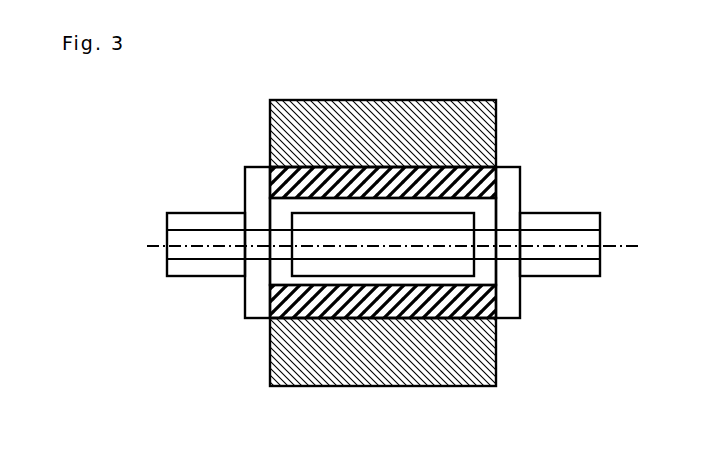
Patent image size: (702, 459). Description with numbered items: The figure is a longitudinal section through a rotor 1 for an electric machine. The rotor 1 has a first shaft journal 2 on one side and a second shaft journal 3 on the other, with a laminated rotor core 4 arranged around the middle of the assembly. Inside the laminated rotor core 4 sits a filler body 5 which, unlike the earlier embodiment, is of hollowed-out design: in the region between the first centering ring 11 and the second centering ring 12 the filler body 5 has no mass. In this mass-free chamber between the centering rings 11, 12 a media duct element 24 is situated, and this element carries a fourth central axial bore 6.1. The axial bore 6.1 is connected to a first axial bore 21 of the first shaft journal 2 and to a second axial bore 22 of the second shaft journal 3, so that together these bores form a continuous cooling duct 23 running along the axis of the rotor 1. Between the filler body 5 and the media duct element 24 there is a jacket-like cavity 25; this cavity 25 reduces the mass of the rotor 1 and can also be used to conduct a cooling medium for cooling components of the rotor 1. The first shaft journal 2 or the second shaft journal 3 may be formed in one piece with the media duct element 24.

The rotor 1 is at (457, 78).
The first shaft journal 2 is at (227, 213).
The second shaft journal 3 is at (520, 215).
The laminated rotor core 4 is at (460, 145).
The filler body 5 is at (437, 302).
The fourth central axial bore 6.1 is at (373, 243).
The first centering ring 11 is at (278, 267).
The second centering ring 12 is at (480, 212).
The first axial bore 21 is at (178, 240).
The second axial bore 22 is at (538, 253).
The cooling duct 23 is at (605, 255).
The media duct element 24 is at (310, 267).
The jacket-like cavity 25 is at (315, 203).